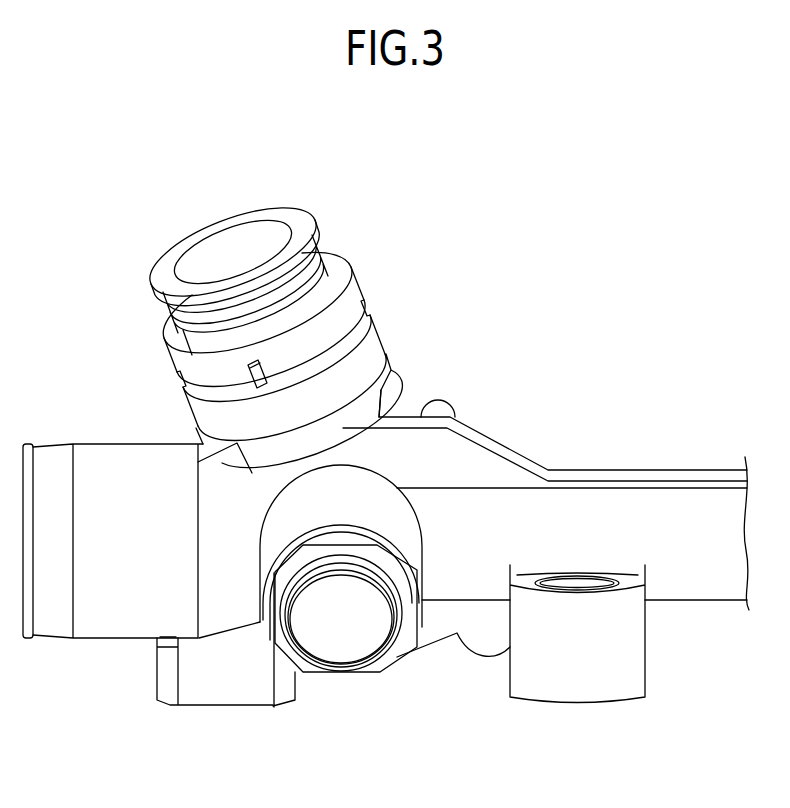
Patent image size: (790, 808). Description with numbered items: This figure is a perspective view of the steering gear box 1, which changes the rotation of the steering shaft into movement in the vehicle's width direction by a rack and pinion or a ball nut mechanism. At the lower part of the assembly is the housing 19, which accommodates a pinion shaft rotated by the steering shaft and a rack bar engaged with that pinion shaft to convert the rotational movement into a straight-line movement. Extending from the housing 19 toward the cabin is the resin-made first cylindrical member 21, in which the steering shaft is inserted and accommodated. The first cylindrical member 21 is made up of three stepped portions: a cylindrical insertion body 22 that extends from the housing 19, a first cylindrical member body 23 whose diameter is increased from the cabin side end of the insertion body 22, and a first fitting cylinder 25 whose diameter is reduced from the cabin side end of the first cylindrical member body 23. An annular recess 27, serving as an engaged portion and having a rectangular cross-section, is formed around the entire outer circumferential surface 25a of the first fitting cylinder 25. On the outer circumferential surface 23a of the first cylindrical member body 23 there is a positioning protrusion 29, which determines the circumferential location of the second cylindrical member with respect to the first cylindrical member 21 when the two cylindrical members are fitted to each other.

The steering gear box 1 is at (386, 435).
The housing 19 is at (340, 677).
The first cylindrical member 21 is at (255, 286).
The insertion body 22 is at (368, 368).
The first cylindrical member body 23 is at (234, 318).
The outer circumferential surface of the first cylindrical member body 23a is at (187, 365).
The first fitting cylinder 25 is at (276, 203).
The outer circumferential surface of the first fitting cylinder 25a is at (318, 212).
The annular recess 27 is at (215, 341).
The positioning protrusion 29 is at (202, 428).